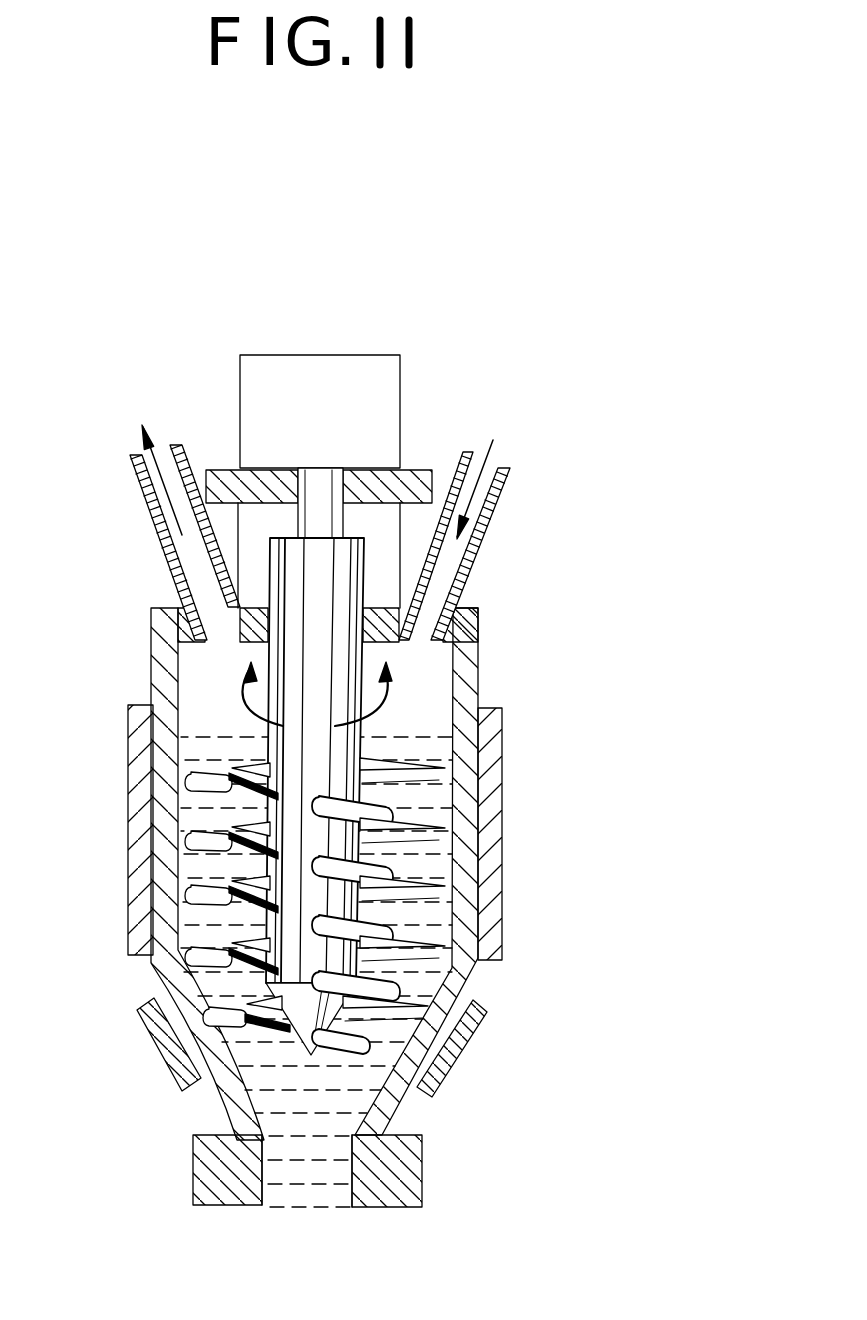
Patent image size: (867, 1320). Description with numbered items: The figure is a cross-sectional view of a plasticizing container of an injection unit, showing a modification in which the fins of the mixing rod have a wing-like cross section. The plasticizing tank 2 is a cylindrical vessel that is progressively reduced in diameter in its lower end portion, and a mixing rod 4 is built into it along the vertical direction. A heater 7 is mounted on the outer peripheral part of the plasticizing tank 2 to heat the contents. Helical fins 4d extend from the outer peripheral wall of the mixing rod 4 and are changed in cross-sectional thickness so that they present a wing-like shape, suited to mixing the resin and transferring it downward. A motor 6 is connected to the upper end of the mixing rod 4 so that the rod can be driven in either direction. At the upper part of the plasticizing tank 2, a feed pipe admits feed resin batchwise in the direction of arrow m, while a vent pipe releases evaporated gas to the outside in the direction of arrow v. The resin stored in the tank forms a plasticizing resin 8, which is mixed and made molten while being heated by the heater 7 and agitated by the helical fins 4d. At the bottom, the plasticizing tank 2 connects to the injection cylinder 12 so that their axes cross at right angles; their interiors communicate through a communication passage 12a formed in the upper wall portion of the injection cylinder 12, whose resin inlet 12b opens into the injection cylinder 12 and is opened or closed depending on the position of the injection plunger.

The motor 6 is at (400, 385).
The arrow m is at (490, 441).
The arrow v is at (165, 490).
The mixing rod 4 is at (396, 768).
The plasticizing tank 2 is at (480, 695).
The heater 7 is at (138, 833).
The helical fins 4d is at (372, 868).
The plasticizing resin 8 is at (380, 1040).
The injection cylinder 12 is at (393, 1177).
The communication passage 12a is at (278, 1179).
The resin inlet 12b is at (308, 1208).